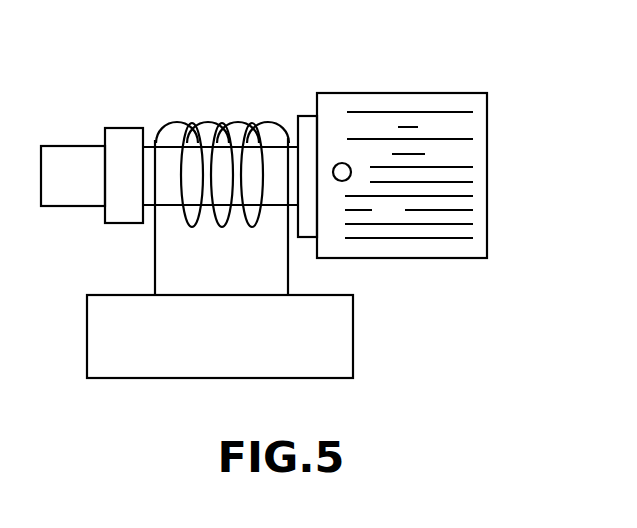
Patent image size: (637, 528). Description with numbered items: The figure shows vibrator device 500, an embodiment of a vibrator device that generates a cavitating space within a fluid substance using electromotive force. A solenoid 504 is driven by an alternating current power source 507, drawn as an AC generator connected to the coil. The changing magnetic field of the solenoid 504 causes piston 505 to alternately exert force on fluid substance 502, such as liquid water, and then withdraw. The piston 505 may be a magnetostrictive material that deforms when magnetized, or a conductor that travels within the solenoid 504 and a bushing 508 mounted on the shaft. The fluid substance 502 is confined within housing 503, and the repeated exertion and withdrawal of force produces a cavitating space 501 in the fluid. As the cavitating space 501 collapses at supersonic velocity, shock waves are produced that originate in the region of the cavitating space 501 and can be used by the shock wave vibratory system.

The vibrator device 500 is at (510, 57).
The cavitating space 501 is at (337, 164).
The fluid substance 502 is at (463, 210).
The housing 503 is at (453, 260).
The solenoid 504 is at (207, 121).
The piston 505 is at (305, 116).
The alternating current power source 507 is at (87, 337).
The bushing 508 is at (120, 128).